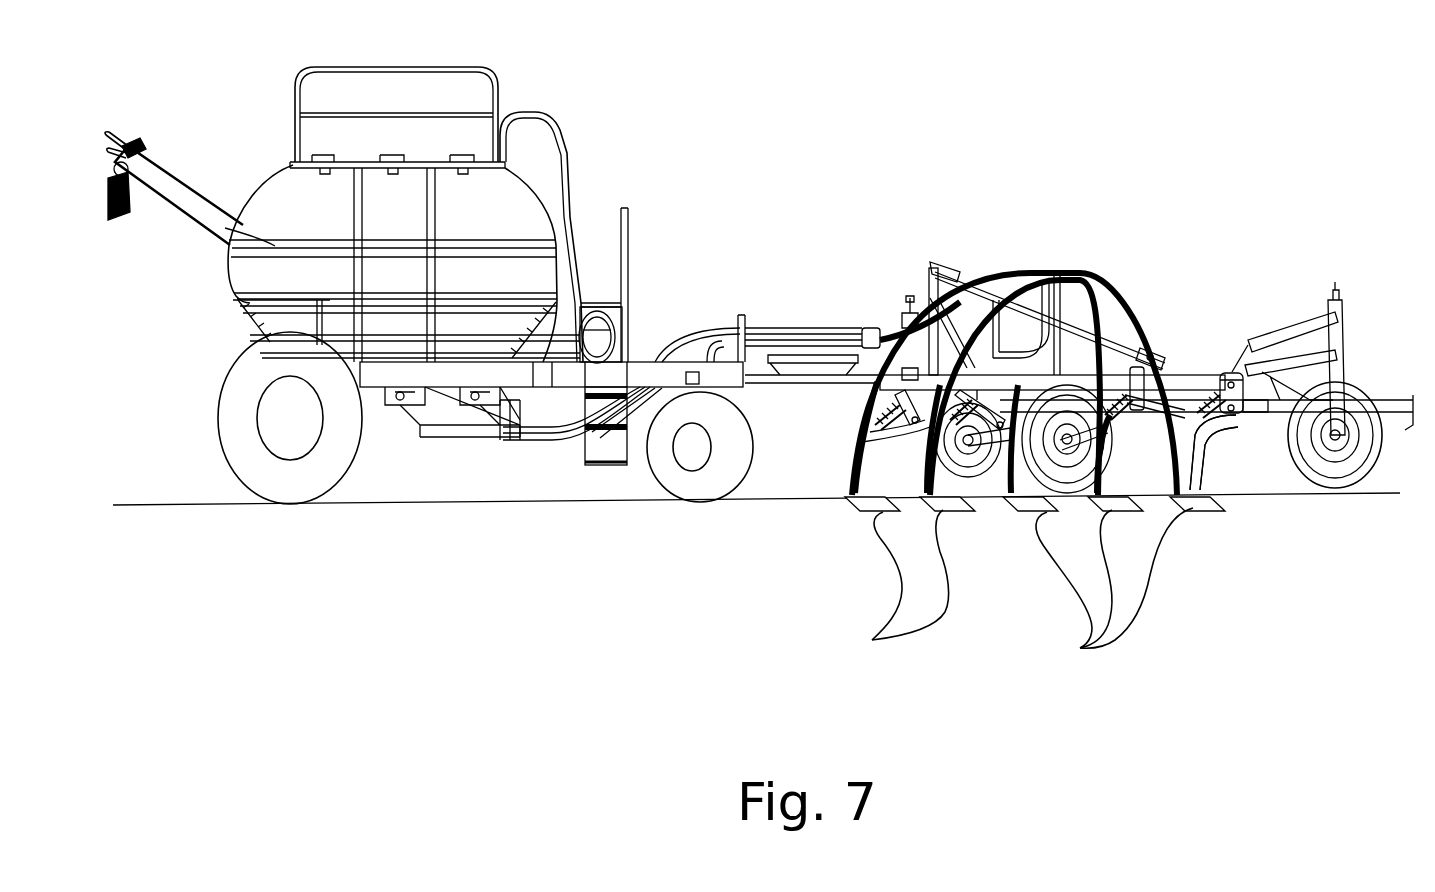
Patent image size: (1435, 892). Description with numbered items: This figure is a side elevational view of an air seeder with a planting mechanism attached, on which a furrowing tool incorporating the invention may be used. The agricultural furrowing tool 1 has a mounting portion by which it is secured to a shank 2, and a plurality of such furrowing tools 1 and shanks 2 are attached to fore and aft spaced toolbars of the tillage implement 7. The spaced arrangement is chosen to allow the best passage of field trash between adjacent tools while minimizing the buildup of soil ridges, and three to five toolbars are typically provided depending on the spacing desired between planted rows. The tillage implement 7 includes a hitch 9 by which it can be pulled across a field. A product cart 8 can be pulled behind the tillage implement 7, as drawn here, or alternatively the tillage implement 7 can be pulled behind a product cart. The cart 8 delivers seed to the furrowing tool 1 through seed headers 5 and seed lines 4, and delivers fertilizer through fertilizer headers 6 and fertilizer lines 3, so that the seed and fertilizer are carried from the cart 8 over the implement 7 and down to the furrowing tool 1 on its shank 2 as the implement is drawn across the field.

The agricultural furrowing tool 1 is at (1020, 589).
The shank 2 is at (1197, 443).
The fertilizer lines 3 is at (1147, 323).
The seed lines 4 is at (1105, 278).
The seed headers 5 is at (1050, 272).
The fertilizer headers 6 is at (1020, 256).
The tillage implement 7 is at (890, 186).
The product cart 8 is at (688, 105).
The hitch 9 is at (1392, 395).